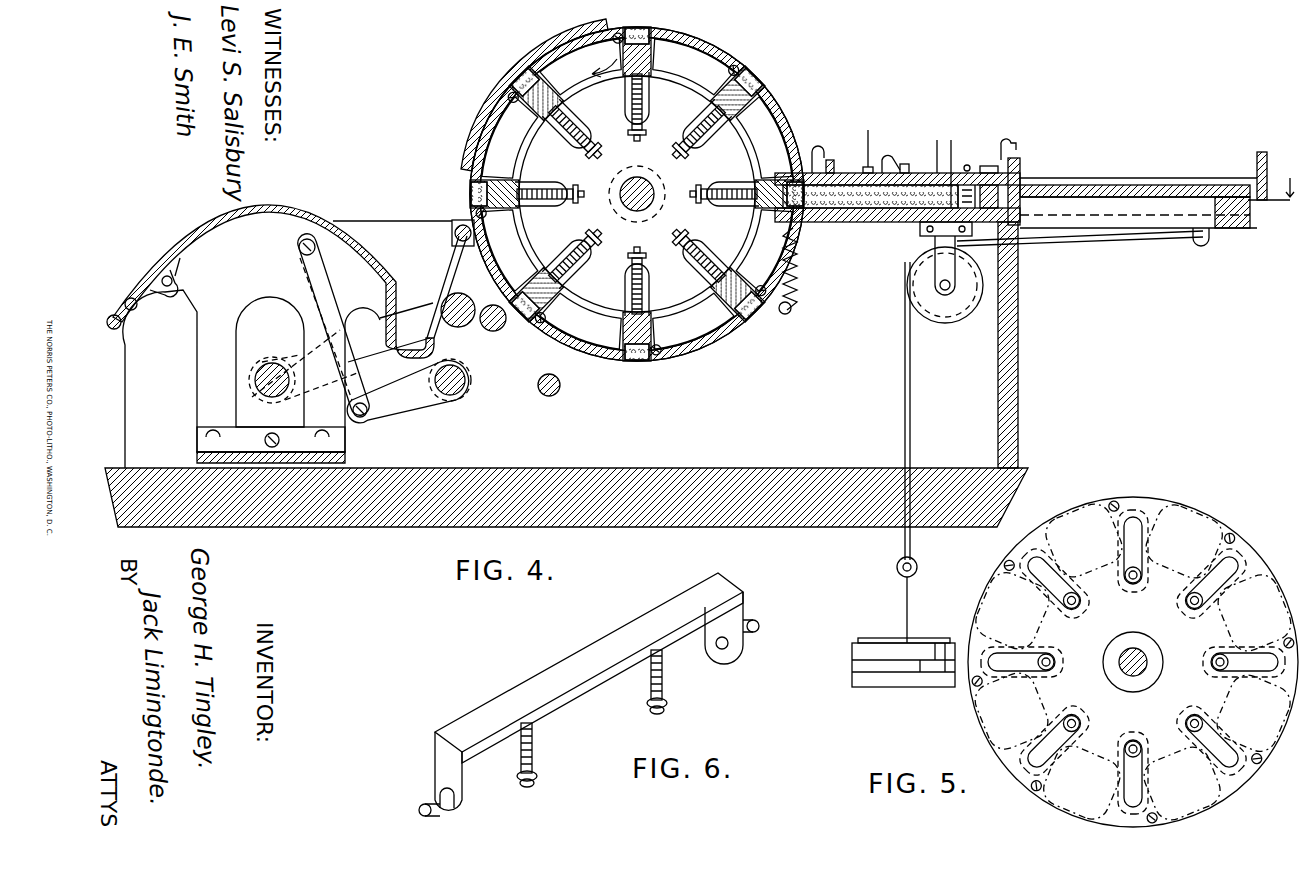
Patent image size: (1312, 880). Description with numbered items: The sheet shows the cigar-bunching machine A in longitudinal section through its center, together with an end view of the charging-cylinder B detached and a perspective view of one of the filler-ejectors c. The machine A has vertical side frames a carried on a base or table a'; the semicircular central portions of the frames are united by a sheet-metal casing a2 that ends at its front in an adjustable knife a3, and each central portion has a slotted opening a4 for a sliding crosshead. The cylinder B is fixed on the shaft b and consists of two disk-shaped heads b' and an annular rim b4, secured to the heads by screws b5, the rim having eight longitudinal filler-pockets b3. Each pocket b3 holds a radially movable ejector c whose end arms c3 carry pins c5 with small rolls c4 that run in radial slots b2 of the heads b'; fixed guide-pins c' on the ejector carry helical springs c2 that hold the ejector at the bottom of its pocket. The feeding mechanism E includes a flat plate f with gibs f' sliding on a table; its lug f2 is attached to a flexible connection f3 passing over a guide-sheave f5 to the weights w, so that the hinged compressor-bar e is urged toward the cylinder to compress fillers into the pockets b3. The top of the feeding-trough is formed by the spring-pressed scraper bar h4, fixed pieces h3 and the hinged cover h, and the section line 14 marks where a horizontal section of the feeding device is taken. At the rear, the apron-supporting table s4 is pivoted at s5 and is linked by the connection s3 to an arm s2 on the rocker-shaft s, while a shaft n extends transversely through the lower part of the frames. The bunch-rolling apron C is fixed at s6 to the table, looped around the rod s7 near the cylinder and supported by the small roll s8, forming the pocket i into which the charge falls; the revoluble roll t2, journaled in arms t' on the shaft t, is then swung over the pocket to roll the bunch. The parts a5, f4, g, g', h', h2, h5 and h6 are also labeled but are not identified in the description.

In FIG. 4, the cigar-bunching machine A is at (833, 75).
In FIG. 4, the charging-cylinder B is at (627, 194).
In FIG. 5, the charging-cylinder B is at (1180, 493).
In FIG. 4, the bunch-rolling flexible apron C is at (273, 281).
In FIG. 4, the filler-feeding mechanism E is at (1084, 138).
In FIG. 4, the side frames a is at (570, 345).
In FIG. 4, the base or table a' is at (566, 512).
In FIG. 4, the sheet-metal casing or housing a2 is at (500, 125).
In FIG. 4, the adjustable cutter or knife a3 is at (800, 130).
In FIG. 4, the slotted opening a4 is at (987, 165).
In FIG. 4, the filling a5 is at (830, 215).
In FIG. 4, the cylinder shaft b is at (629, 194).
In FIG. 5, the cylinder shaft b is at (1122, 662).
In FIG. 4, the disk-shaped heads b' is at (713, 230).
In FIG. 5, the disk-shaped heads b' is at (1133, 662).
In FIG. 5, the radial slots b2 is at (1033, 655).
In FIG. 4, the filler-pockets b3 is at (524, 90).
In FIG. 5, the filler-pockets b3 is at (1140, 510).
In FIG. 4, the annular rim b4 is at (556, 60).
In FIG. 5, the annular rim b4 is at (1265, 556).
In FIG. 4, the screws b5 is at (600, 36).
In FIG. 5, the screws b5 is at (1108, 503).
In FIG. 4, the filler-ejector c is at (641, 189).
In FIG. 5, the filler-ejector c is at (1096, 536).
In FIG. 6, the filler-ejector c is at (589, 668).
In FIG. 4, the fixed guides or pins c' is at (649, 163).
In FIG. 6, the fixed guides or pins c' is at (592, 742).
In FIG. 4, the helical springs c2 is at (648, 107).
In FIG. 6, the helical springs c2 is at (650, 688).
In FIG. 4, the end arms c3 is at (624, 282).
In FIG. 5, the end arms c3 is at (1128, 572).
In FIG. 6, the end arms c3 is at (445, 762).
In FIG. 5, the small roll c4 is at (1148, 576).
In FIG. 6, the small roll c4 is at (440, 800).
In FIG. 5, the outwardly-projecting pin c5 is at (1190, 600).
In FIG. 6, the outwardly-projecting pin c5 is at (419, 810).
In FIG. 4, the compressor-bar e is at (947, 160).
In FIG. 4, the flat plate f is at (1138, 186).
In FIG. 4, the gibs f' is at (1239, 226).
In FIG. 4, the lug f2 is at (1200, 190).
In FIG. 4, the flexible connection f3 is at (1145, 244).
In FIG. 4, the flange f4 is at (1250, 182).
In FIG. 4, the guide-sheave f5 is at (950, 318).
In FIG. 4, the gate g is at (1023, 178).
In FIG. 4, the gate hook g' is at (1010, 135).
In FIG. 4, the hinged cover h is at (873, 151).
In FIG. 4, the pin h' is at (972, 150).
In FIG. 4, the pin h2 is at (870, 126).
In FIG. 4, the fixed pieces h3 is at (847, 165).
In FIG. 4, the spring-pressed bar h4 is at (814, 147).
In FIG. 4, the spring h5 is at (800, 268).
In FIG. 4, the bent pin h6 is at (886, 157).
In FIG. 4, the apron pocket i is at (400, 290).
In FIG. 4, the transverse shaft n is at (560, 388).
In FIG. 4, the rocker-shaft s is at (463, 395).
In FIG. 4, the arm s2 is at (405, 404).
In FIG. 4, the connection s3 is at (335, 290).
In FIG. 4, the apron-supporting table s4 is at (335, 260).
In FIG. 4, the table pivot s5 is at (176, 282).
In FIG. 4, the apron attachment point s6 is at (128, 320).
In FIG. 4, the rod s7 is at (498, 330).
In FIG. 4, the small rod or roll s8 is at (462, 246).
In FIG. 4, the roll shaft t is at (253, 370).
In FIG. 4, the roll-carrying arms t' is at (304, 359).
In FIG. 4, the revoluble roll t2 is at (462, 368).
In FIG. 4, the weights w is at (860, 640).
In FIG. 4, the section line 14 is at (1113, 168).